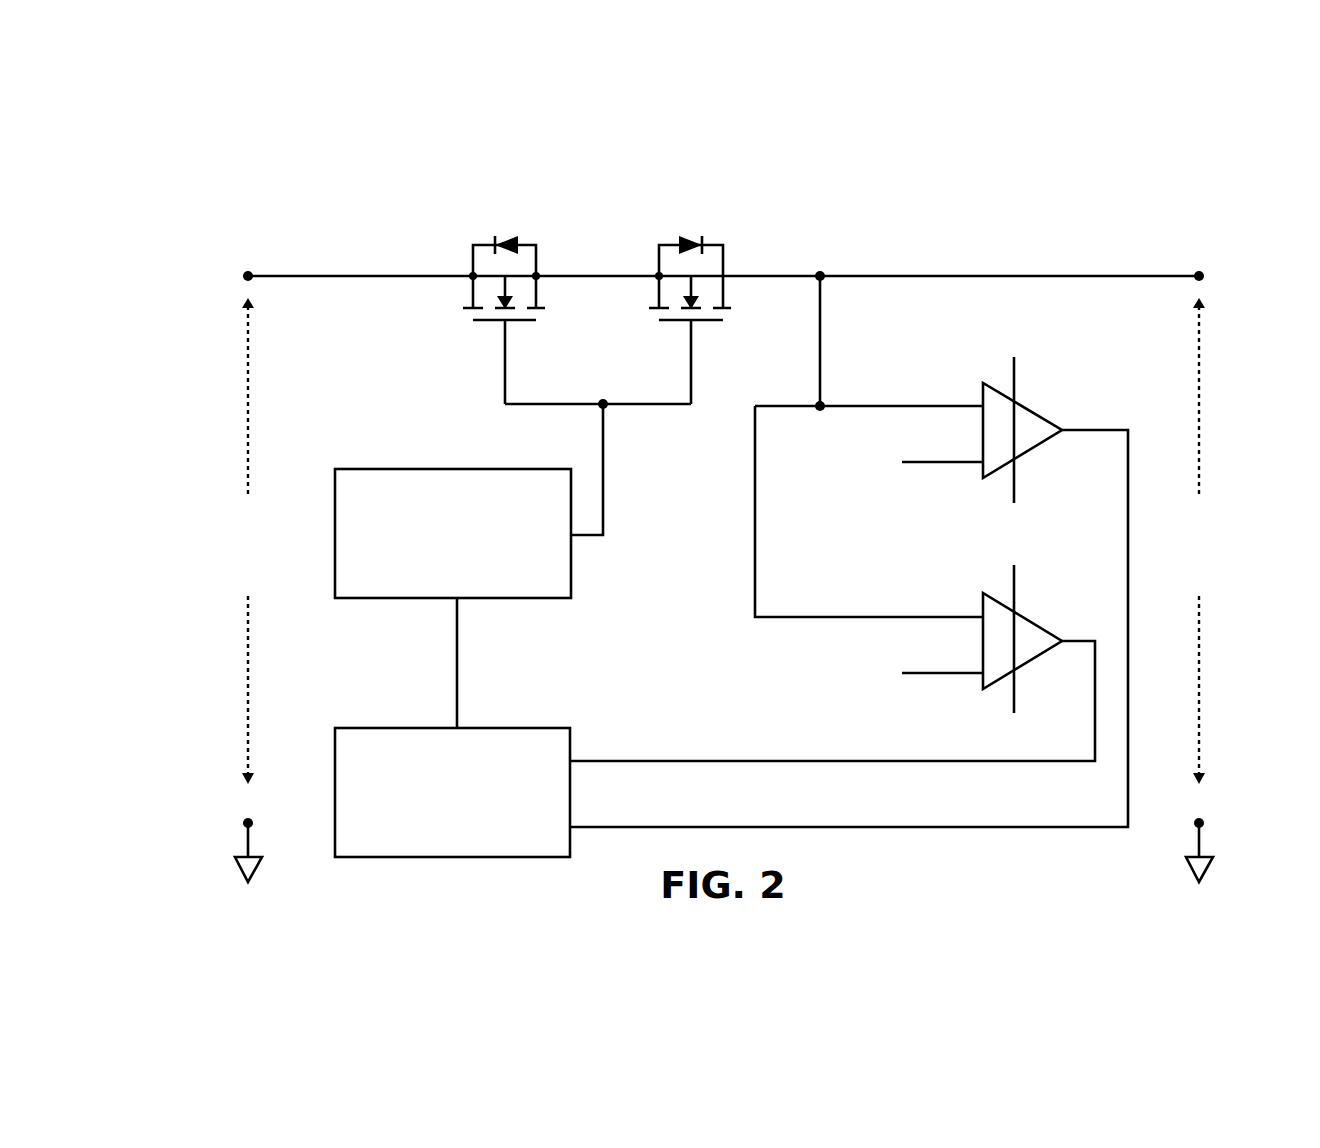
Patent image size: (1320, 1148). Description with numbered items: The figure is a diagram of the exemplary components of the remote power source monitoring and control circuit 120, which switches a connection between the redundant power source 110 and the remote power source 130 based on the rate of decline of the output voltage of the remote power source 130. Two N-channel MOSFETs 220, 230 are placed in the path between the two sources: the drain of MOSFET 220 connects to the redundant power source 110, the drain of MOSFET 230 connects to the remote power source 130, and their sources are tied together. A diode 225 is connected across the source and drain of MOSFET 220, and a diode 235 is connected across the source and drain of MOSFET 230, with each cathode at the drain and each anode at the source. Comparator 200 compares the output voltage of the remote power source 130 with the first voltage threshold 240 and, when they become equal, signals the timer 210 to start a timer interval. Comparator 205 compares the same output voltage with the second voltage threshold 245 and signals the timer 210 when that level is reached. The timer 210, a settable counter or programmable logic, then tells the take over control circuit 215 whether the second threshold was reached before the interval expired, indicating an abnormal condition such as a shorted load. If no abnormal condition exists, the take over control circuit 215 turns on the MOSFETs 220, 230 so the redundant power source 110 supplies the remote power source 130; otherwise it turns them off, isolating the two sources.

The remote power source monitoring and control circuit 120 is at (212, 137).
The redundant power source 110 is at (197, 497).
The remote power source 130 is at (1217, 492).
The N-channel MOSFET 220 is at (455, 330).
The diode 225 is at (505, 222).
The N-channel MOSFET 230 is at (643, 330).
The diode 235 is at (691, 210).
The take over control circuit 215 is at (384, 468).
The timer 210 is at (382, 728).
The comparator 200 is at (1028, 404).
The comparator 205 is at (1028, 614).
The voltage threshold 1 240 is at (850, 496).
The voltage threshold 2 245 is at (845, 705).